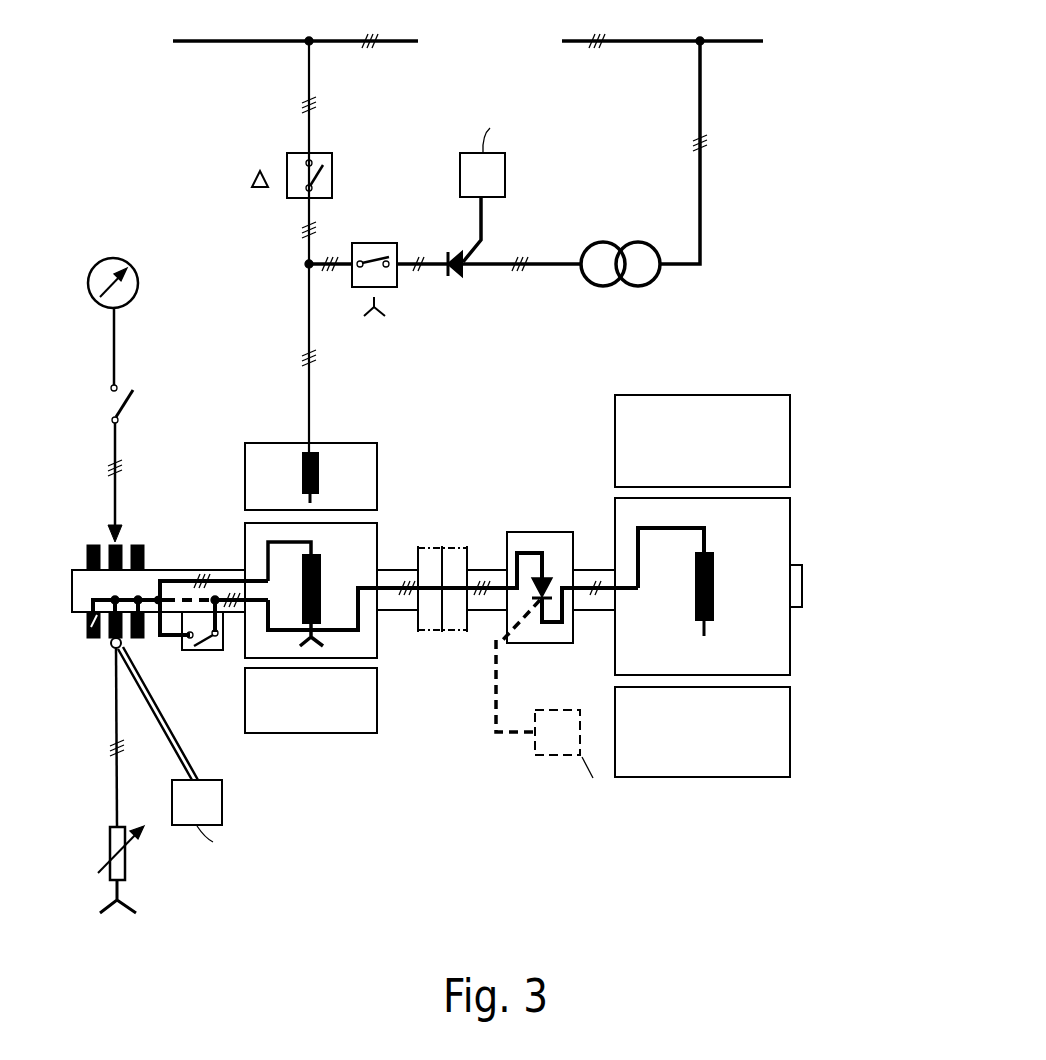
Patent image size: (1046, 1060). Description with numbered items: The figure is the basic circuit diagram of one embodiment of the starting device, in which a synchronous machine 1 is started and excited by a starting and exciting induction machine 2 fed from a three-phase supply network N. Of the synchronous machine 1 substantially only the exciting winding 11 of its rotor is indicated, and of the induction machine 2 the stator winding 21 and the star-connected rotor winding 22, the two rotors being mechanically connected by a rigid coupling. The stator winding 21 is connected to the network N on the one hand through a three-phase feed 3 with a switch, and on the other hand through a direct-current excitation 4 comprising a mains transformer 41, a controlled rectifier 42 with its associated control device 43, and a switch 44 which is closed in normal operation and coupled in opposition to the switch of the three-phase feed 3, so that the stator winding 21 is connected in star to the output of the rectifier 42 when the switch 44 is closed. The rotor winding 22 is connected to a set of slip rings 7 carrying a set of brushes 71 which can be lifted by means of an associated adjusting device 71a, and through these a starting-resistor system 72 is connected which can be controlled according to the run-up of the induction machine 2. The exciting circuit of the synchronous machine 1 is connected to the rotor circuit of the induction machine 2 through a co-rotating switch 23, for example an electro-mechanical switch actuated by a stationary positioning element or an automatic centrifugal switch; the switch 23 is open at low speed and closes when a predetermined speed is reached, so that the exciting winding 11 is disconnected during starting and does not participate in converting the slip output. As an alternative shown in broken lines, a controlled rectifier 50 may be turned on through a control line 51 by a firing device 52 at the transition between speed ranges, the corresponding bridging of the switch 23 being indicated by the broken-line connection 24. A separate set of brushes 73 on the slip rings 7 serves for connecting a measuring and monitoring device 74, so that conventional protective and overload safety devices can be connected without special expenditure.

The three-phase supply network N is at (502, 38).
The synchronous machine 1 is at (711, 373).
The starting and exciting induction machine 2 is at (281, 420).
The three-phase feed 3 is at (262, 90).
The direct-current excitation 4 is at (628, 210).
The set of slip rings 7 is at (92, 545).
The exciting winding 11 is at (695, 597).
The stator winding 21 is at (322, 465).
The rotor winding 22 is at (322, 567).
The co-rotating switch 23 is at (212, 650).
The connection 24 is at (175, 597).
The mains transformer 41 is at (606, 287).
The controlled rectifier 42 is at (455, 272).
The control device 43 is at (460, 174).
The switch 44 is at (363, 252).
The controlled rectifier 50 is at (545, 540).
The control line 51 is at (500, 708).
The firing device 52 is at (533, 750).
The set of brushes 71 is at (110, 648).
The adjusting device 71a is at (222, 805).
The starting-resistor system 72 is at (142, 869).
The separate set of brushes 73 is at (123, 533).
The measuring and monitoring device 74 is at (133, 272).